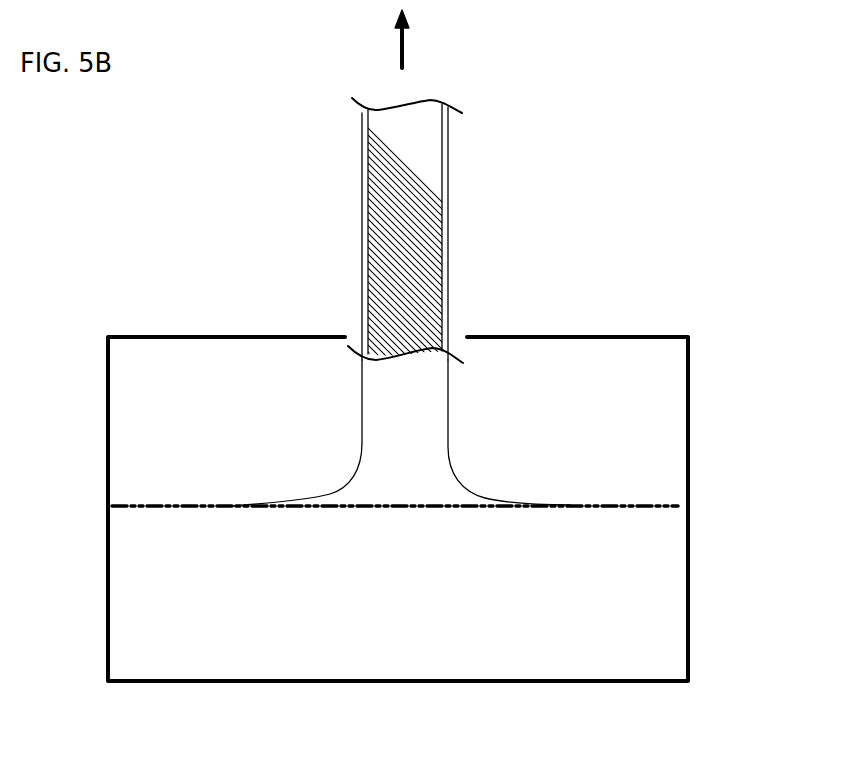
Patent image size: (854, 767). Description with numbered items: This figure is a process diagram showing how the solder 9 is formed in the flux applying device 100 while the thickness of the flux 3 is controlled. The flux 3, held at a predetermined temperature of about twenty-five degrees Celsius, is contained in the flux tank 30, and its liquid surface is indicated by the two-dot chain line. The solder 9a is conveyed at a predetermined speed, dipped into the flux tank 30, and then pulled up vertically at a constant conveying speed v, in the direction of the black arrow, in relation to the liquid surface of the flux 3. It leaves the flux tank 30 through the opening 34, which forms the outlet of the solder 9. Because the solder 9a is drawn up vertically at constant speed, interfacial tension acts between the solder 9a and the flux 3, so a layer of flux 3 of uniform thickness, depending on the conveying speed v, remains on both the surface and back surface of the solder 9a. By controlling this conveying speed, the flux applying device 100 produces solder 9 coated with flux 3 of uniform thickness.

The flux applying device 100 is at (220, 163).
The flux tank 30 is at (690, 616).
The opening 34 is at (347, 337).
The flux 3 is at (453, 336).
The solder 9a is at (438, 98).
The solder 9 is at (415, 284).